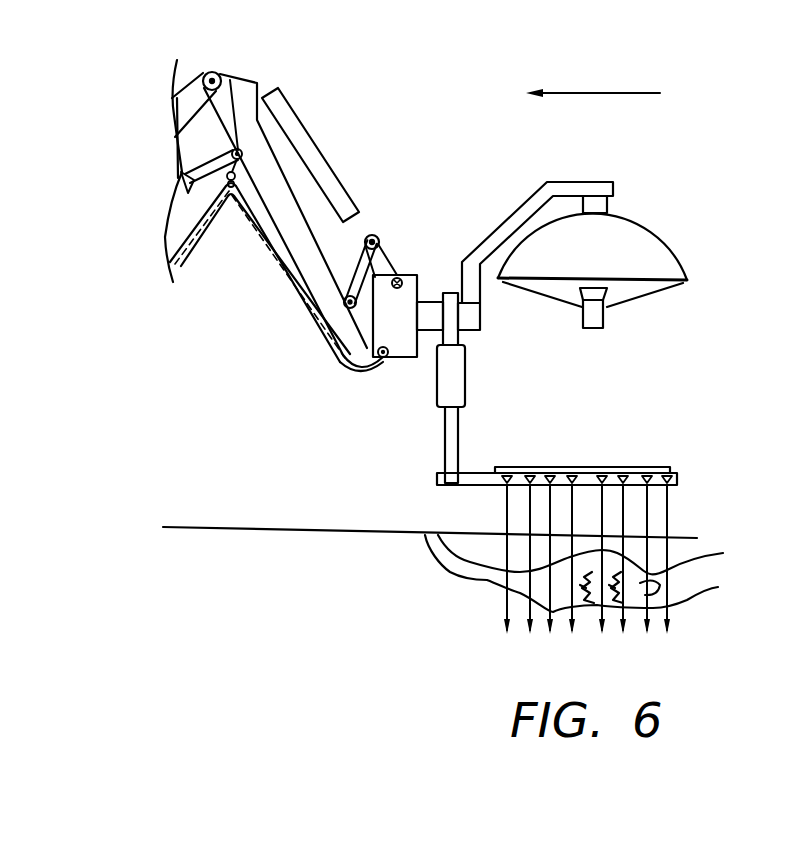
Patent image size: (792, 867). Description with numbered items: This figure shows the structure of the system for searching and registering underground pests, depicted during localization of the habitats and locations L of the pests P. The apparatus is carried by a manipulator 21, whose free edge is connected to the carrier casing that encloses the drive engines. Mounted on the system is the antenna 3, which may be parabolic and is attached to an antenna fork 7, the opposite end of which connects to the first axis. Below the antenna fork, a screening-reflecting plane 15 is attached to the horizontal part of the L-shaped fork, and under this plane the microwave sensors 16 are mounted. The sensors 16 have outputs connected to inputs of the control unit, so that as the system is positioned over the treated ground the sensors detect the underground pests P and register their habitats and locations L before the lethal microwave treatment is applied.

The antenna 3 is at (627, 237).
The antenna fork 7 is at (612, 182).
The screening-reflecting plane 15 is at (627, 478).
The microwave sensors 16 is at (670, 472).
The manipulator 21 is at (280, 128).
The pests P is at (590, 554).
The habitats and locations L is at (580, 573).